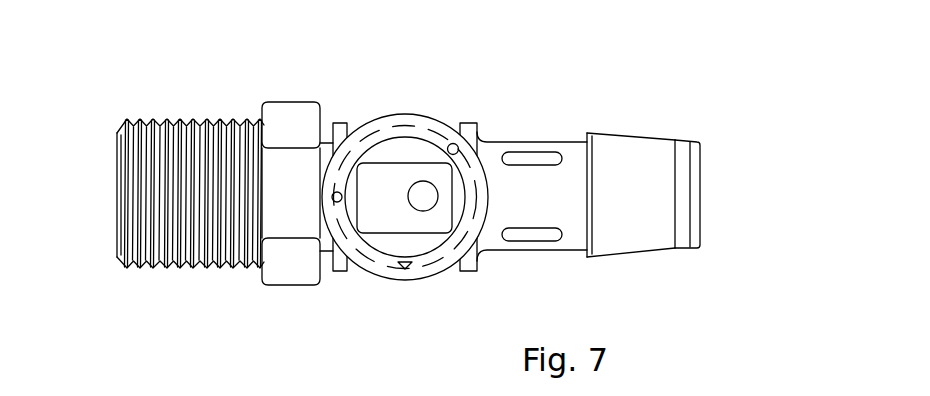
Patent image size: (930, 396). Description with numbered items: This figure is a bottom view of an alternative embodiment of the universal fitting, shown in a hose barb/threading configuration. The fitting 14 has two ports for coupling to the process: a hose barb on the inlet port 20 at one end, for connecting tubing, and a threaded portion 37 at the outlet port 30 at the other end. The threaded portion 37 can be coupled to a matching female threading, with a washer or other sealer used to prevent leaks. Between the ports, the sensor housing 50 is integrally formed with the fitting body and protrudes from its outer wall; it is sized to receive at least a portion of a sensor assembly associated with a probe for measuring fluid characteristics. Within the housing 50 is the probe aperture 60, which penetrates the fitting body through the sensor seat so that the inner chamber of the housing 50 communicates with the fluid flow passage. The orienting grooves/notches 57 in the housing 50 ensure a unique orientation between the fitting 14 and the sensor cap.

The fitting 14 is at (568, 155).
The inlet port 20 is at (700, 197).
The outlet port 30 is at (117, 200).
The threaded portion 37 is at (175, 119).
The sensor housing 50 is at (398, 207).
The orienting grooves/notches 57 is at (442, 152).
The probe aperture 60 is at (423, 212).